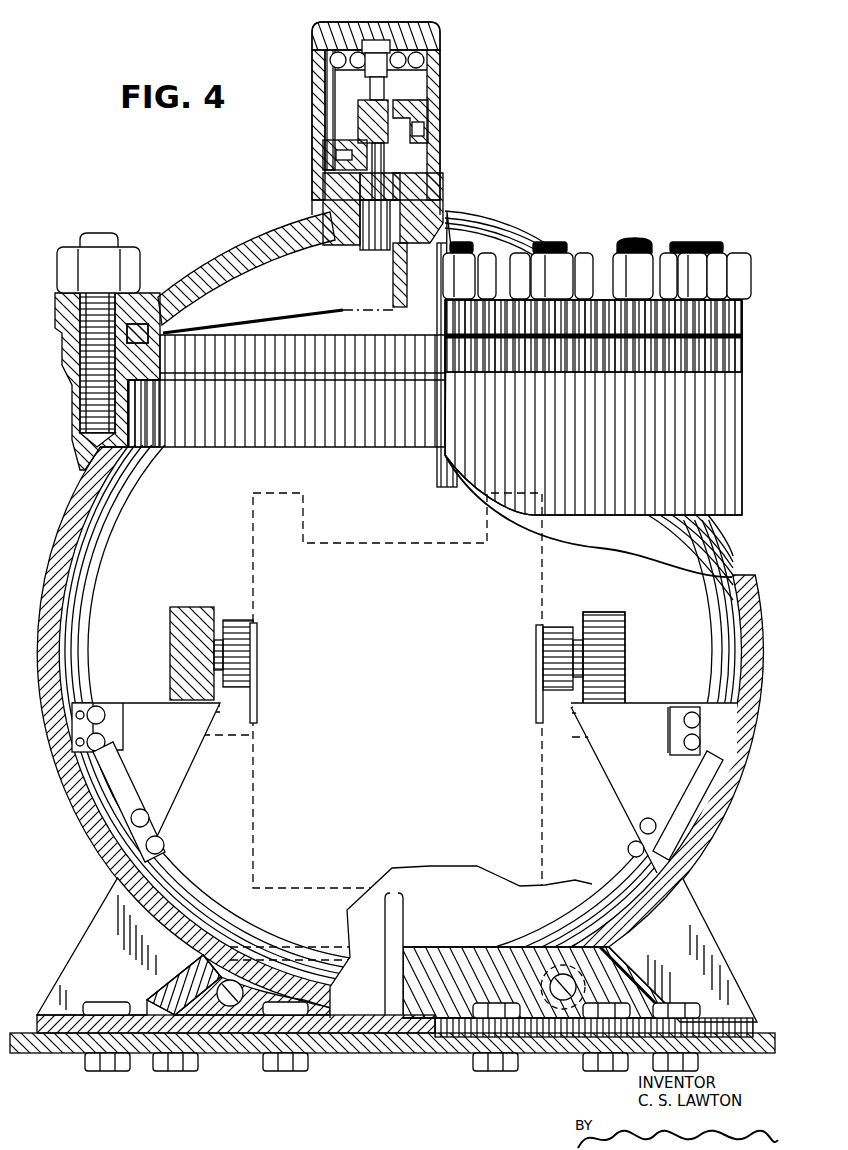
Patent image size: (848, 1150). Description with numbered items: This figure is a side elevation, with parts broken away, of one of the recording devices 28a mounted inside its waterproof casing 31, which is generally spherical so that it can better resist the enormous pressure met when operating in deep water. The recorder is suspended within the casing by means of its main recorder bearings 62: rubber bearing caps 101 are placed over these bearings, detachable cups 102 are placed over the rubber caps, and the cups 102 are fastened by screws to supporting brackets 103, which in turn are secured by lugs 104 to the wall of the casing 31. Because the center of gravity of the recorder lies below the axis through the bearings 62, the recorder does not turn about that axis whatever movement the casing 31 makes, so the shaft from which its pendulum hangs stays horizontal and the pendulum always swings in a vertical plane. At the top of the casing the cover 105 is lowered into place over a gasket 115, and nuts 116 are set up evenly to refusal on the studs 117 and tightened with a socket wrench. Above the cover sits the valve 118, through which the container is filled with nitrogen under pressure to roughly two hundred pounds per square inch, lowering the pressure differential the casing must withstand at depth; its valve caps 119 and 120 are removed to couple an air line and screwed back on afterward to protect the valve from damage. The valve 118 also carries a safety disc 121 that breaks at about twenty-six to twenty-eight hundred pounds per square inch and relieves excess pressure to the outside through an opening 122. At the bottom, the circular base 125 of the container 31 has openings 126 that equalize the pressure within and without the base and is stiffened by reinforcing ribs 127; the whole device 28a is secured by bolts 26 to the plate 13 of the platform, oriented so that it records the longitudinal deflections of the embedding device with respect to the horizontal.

The valve cap 120 is at (441, 46).
The valve 118 is at (397, 98).
The valve cap 119 is at (441, 120).
The safety disc 121 is at (326, 137).
The opening 122 is at (325, 162).
The nuts 116 is at (68, 263).
The studs 117 is at (88, 389).
The gasket 115 is at (143, 323).
The cover 105 is at (222, 255).
The waterproof casing 31 is at (70, 482).
The main recorder bearings 62 is at (172, 628).
The detachable cups 102 is at (190, 607).
The rubber bearing caps 101 is at (227, 617).
The lugs 104 is at (85, 705).
The supporting brackets 103 is at (190, 763).
The recording device 28a is at (412, 705).
The reinforcing ribs 127 is at (100, 940).
The circular base 125 is at (155, 985).
The openings 126 is at (548, 1000).
The bolts 26 is at (176, 1066).
The plate 13 is at (236, 1054).